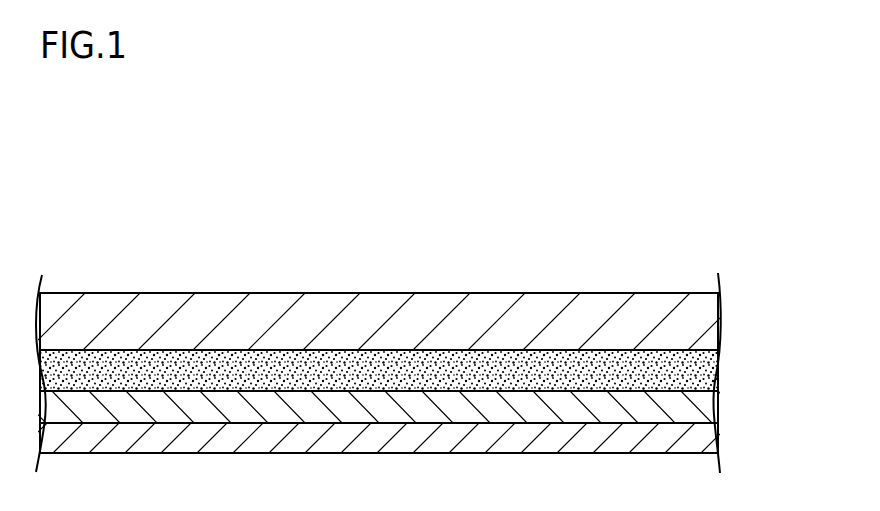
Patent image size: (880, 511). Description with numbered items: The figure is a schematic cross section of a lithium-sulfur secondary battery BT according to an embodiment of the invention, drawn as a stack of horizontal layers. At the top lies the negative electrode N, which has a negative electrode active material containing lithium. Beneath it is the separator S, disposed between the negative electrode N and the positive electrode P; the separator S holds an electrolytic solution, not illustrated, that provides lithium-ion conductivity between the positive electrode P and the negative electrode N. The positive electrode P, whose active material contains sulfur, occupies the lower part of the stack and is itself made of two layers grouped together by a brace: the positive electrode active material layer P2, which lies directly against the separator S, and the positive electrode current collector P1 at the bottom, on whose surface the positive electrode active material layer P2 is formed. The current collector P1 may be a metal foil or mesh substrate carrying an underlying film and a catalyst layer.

The lithium-sulfur secondary battery BT is at (588, 288).
The negative electrode N is at (700, 318).
The separator S is at (700, 370).
The positive electrode P is at (785, 393).
The positive electrode active material layer P2 is at (700, 408).
The positive electrode current collector P1 is at (700, 440).